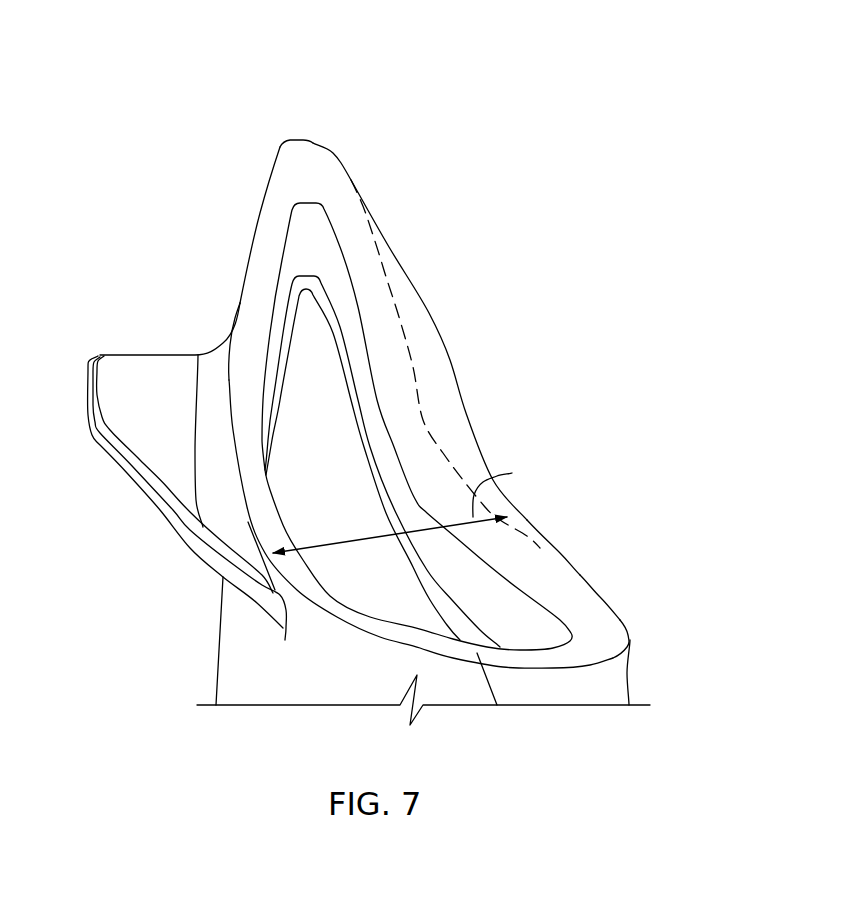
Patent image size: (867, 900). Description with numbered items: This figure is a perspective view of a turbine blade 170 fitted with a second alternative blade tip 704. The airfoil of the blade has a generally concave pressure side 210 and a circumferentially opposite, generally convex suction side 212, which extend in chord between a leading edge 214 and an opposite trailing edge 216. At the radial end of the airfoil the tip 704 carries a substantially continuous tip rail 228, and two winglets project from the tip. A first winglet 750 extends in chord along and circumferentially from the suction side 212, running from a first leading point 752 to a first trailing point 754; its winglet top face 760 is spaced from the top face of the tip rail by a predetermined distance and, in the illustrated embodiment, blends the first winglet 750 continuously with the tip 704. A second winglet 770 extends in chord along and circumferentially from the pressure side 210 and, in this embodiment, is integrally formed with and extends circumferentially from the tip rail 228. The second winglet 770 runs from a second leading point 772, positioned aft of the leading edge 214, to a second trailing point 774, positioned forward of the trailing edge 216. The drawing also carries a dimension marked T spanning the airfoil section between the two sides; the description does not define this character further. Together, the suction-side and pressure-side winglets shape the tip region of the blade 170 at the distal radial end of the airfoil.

The turbine blade 170 is at (392, 384).
The blade tip 704 is at (308, 97).
The trailing edge 216 is at (313, 137).
The second trailing point 774 is at (357, 172).
The suction side 212 is at (242, 228).
The first trailing point 754 is at (238, 305).
The winglet top face 760 is at (168, 373).
The first winglet 750 is at (122, 357).
The first leading point 752 is at (284, 642).
The second winglet 770 is at (430, 333).
The second leading point 772 is at (558, 554).
The pressure side 210 is at (610, 577).
The tip rail 228 is at (667, 633).
The leading edge 214 is at (634, 647).
The wall thickness T is at (400, 508).